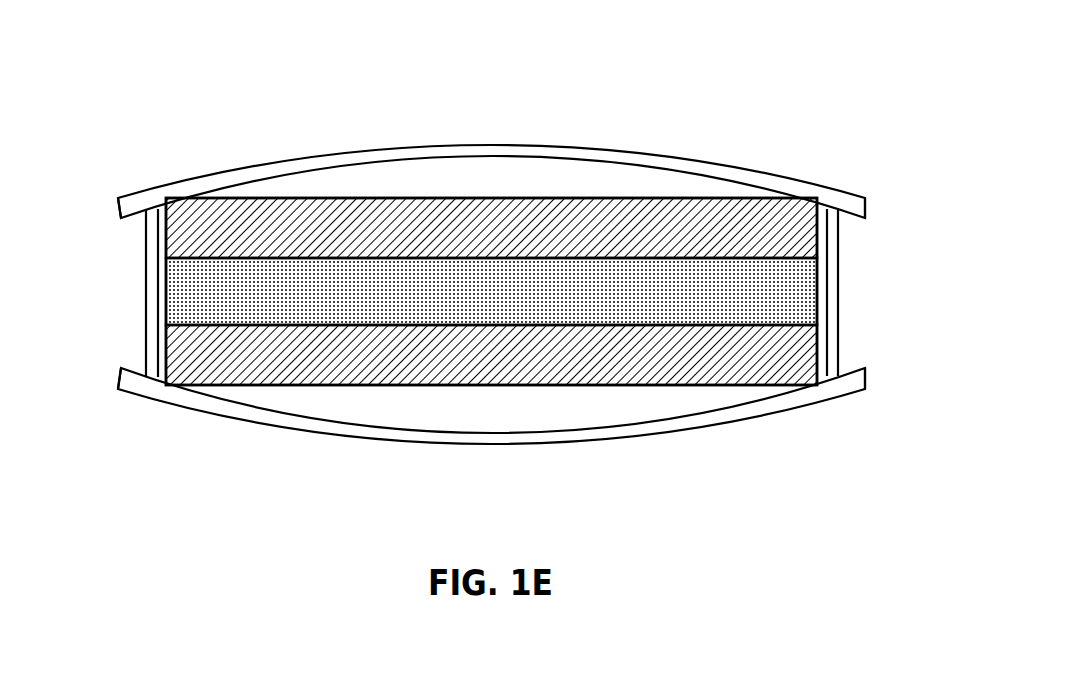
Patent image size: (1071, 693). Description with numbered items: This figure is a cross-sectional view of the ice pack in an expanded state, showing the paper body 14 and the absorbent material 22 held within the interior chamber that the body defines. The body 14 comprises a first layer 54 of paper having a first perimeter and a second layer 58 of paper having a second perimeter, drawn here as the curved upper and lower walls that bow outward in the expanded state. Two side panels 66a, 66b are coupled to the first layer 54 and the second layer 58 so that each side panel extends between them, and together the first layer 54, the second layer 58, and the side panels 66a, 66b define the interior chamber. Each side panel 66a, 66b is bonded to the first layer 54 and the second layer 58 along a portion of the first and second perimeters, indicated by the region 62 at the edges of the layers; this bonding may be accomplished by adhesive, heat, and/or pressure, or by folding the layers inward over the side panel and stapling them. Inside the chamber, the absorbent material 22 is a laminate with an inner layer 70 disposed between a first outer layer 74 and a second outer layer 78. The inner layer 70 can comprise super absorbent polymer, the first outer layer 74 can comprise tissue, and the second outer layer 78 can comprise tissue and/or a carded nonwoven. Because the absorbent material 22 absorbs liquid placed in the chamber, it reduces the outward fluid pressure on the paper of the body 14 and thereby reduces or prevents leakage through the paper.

The body 14 is at (491, 270).
The absorbent material 22 is at (340, 384).
The first layer 54 is at (268, 162).
The second layer 58 is at (232, 418).
The region 62 is at (867, 208).
The side panel 66a is at (838, 337).
The side panel 66b is at (147, 250).
The inner layer 70 is at (817, 285).
The first outer layer 74 is at (713, 385).
The second outer layer 78 is at (717, 198).